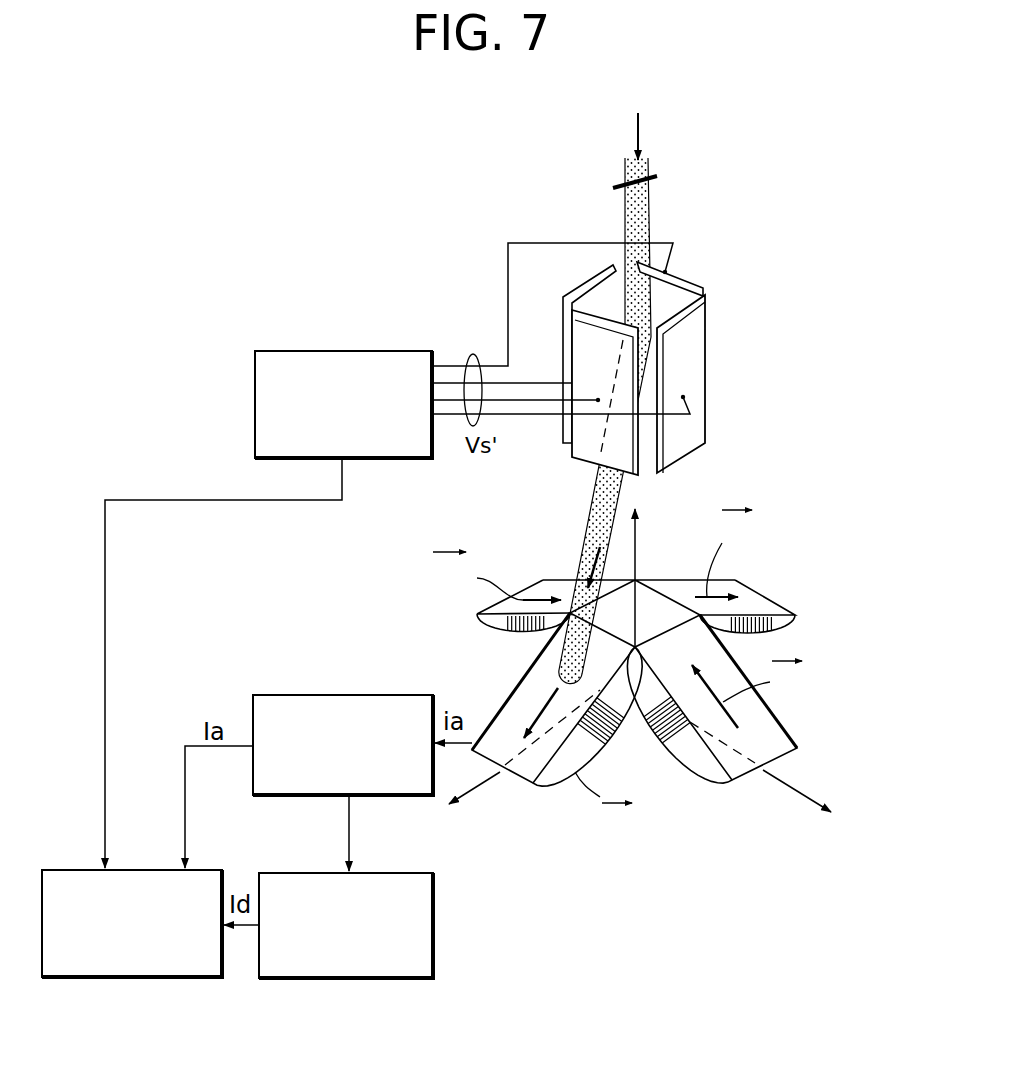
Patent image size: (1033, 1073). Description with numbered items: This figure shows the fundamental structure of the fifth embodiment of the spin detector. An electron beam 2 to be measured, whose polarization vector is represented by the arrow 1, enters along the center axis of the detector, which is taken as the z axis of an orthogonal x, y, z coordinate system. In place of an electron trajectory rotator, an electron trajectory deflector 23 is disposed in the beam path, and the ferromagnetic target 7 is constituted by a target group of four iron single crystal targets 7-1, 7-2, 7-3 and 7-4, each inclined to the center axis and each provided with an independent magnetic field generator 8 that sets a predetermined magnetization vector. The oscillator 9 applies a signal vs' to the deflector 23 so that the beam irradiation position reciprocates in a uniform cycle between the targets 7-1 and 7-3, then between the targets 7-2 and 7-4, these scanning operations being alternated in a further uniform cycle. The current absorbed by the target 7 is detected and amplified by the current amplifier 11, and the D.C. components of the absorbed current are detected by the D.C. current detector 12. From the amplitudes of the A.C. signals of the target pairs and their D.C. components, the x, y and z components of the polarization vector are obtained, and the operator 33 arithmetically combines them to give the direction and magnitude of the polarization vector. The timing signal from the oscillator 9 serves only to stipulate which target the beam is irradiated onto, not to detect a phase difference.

The polarization vector arrow 1 is at (654, 170).
The electron beam 2 is at (643, 212).
The ferromagnetic target 7 is at (658, 687).
The iron single crystal target 7-1 is at (517, 780).
The iron single crystal target 7-2 is at (783, 763).
The iron single crystal target 7-3 is at (750, 582).
The iron single crystal target 7-4 is at (515, 592).
The magnetic field generator 8 is at (490, 627).
The oscillator 9 is at (397, 351).
The current amplifier 11 is at (335, 695).
The D.C. current detector 12 is at (390, 978).
The electron trajectory deflector 23 is at (722, 278).
The operator 33 is at (167, 977).